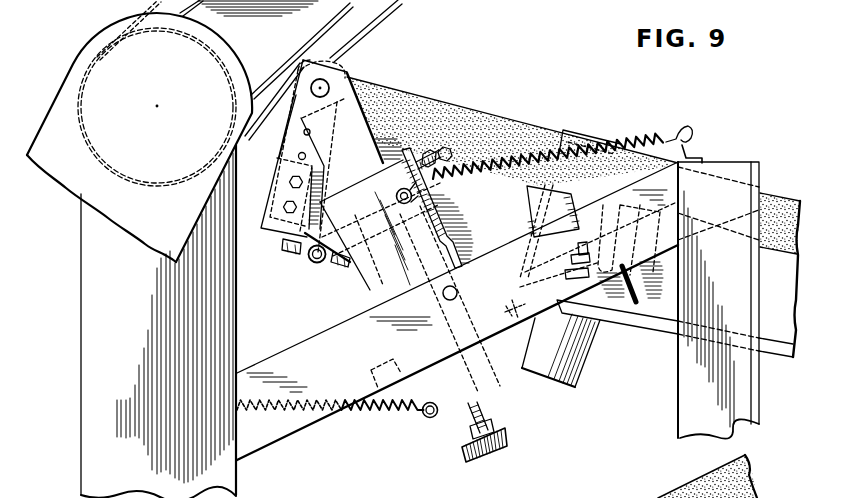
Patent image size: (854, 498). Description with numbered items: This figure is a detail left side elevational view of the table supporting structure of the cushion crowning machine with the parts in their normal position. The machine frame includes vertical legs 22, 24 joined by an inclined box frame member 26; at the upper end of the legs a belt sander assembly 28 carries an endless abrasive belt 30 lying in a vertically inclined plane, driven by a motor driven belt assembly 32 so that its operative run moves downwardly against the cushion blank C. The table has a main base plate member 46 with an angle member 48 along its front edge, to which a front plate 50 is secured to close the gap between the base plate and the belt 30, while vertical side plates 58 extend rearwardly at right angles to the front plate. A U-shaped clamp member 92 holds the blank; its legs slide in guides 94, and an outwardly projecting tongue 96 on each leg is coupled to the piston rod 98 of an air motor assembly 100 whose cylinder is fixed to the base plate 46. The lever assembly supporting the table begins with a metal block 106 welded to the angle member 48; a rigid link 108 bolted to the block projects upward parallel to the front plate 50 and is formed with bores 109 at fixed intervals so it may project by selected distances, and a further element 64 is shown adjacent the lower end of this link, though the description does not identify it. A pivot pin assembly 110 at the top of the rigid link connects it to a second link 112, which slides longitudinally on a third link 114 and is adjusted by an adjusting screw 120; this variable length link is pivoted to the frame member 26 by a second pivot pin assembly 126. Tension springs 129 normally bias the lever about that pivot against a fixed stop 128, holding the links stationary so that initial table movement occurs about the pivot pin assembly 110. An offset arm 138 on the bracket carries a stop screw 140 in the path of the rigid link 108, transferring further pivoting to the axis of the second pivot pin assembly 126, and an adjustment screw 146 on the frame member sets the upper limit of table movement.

The vertical leg 22 is at (157, 466).
The vertical leg 24 is at (741, 301).
The inclined box frame member 26 is at (348, 359).
The belt sander assembly 28 is at (277, 49).
The endless abrasive belt 30 is at (396, 0).
The motor driven belt assembly 32 is at (69, 106).
The main base plate member 46 is at (654, 325).
The angle member 48 is at (262, 209).
The front plate 50 is at (352, 116).
The vertical side plate 58 is at (470, 165).
The roller 64 is at (318, 263).
The clamp member 92 is at (587, 134).
The guide 94 is at (534, 226).
The tongue 96 is at (600, 232).
The piston rod 98 is at (618, 258).
The air motor assembly 100 is at (581, 363).
The metal block 106 is at (321, 200).
The rigid link 108 is at (300, 140).
The bores 109 is at (300, 158).
The pivot pin assembly 110 is at (330, 87).
The second link 112 is at (357, 124).
The third link 114 is at (368, 290).
The adjusting screw 120 is at (490, 418).
The second pivot pin assembly 126 is at (451, 300).
The fixed stop 128 is at (377, 383).
The tension spring 129 is at (350, 420).
The offset arm 138 is at (447, 209).
The stop screw 140 is at (447, 160).
The adjustment screw 146 is at (510, 312).
The cushion blank C is at (458, 128).